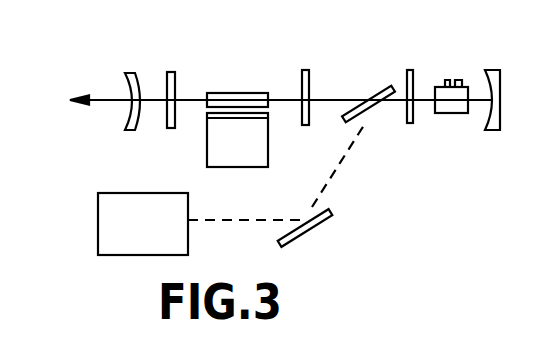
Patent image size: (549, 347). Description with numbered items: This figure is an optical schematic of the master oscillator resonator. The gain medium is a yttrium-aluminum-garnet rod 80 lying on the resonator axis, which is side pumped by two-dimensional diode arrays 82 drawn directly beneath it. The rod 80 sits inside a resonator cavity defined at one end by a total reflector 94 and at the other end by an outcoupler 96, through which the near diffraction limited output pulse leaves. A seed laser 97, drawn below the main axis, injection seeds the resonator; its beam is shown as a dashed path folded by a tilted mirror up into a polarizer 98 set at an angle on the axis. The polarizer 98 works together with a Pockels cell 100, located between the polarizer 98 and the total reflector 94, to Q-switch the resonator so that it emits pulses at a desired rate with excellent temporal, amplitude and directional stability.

The YAG rod 80 is at (263, 92).
The two-dimensional diode arrays 82 is at (268, 147).
The total reflector 94 is at (494, 131).
The outcoupler 96 is at (131, 74).
The seed laser 97 is at (98, 219).
The polarizer 98 is at (372, 107).
The Pockels cell 100 is at (439, 86).